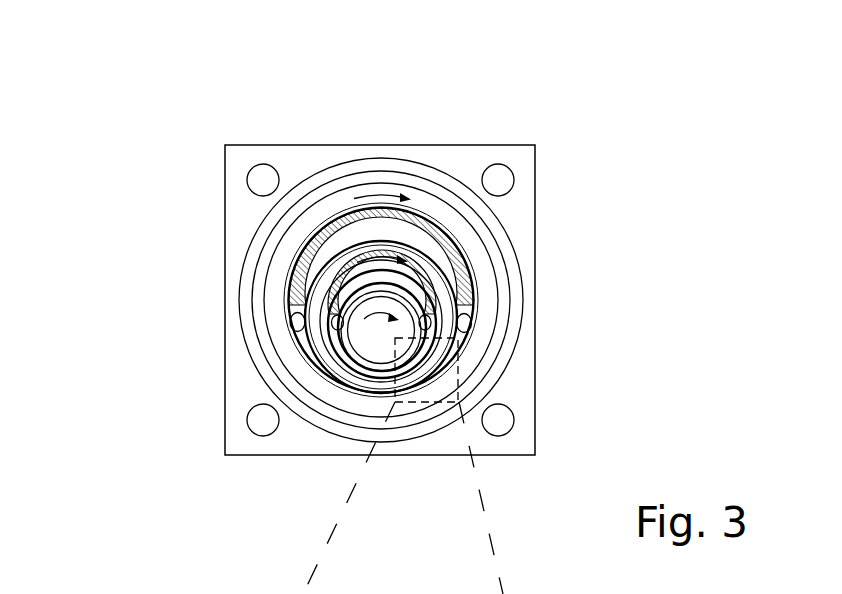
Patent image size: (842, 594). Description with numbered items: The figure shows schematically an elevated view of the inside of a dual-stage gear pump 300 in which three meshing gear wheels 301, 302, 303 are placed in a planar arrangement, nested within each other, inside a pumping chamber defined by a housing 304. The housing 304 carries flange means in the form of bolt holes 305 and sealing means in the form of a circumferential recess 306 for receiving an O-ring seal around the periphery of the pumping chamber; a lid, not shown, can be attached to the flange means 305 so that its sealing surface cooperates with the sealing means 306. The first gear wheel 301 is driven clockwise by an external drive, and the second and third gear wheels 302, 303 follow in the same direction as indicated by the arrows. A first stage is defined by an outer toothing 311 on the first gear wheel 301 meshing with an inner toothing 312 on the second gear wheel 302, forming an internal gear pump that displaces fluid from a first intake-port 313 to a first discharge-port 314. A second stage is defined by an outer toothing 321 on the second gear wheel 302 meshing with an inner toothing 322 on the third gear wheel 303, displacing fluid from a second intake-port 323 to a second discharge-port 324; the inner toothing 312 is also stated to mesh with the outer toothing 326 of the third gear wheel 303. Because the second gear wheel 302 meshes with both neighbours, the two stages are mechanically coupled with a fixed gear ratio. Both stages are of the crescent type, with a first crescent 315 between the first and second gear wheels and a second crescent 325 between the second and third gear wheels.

The dual-stage gear pump 300 is at (113, 99).
The first gear wheel 301 is at (380, 333).
The second gear wheel 302 is at (384, 381).
The third gear wheel 303 is at (376, 391).
The housing 304 is at (314, 160).
The bolt holes 305 is at (263, 180).
The circumferential recess 306 is at (433, 173).
The outer toothing 311 is at (348, 338).
The inner toothing 312 is at (343, 343).
The first intake-port 313 is at (338, 326).
The first discharge-port 314 is at (419, 318).
The first crescent 315 is at (400, 288).
The outer toothing 321 is at (456, 360).
The inner toothing 322 is at (462, 346).
The second intake-port 323 is at (292, 314).
The second discharge-port 324 is at (466, 323).
The second crescent 325 is at (342, 237).
The outer toothing 326 is at (473, 225).